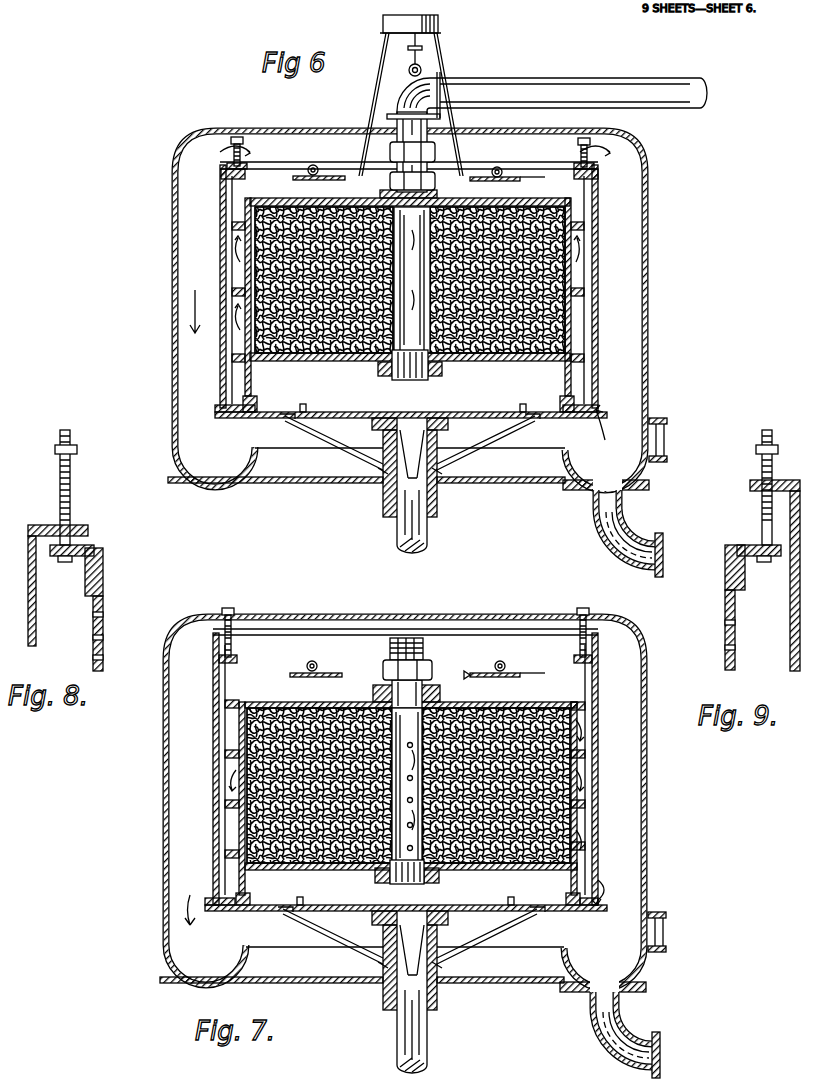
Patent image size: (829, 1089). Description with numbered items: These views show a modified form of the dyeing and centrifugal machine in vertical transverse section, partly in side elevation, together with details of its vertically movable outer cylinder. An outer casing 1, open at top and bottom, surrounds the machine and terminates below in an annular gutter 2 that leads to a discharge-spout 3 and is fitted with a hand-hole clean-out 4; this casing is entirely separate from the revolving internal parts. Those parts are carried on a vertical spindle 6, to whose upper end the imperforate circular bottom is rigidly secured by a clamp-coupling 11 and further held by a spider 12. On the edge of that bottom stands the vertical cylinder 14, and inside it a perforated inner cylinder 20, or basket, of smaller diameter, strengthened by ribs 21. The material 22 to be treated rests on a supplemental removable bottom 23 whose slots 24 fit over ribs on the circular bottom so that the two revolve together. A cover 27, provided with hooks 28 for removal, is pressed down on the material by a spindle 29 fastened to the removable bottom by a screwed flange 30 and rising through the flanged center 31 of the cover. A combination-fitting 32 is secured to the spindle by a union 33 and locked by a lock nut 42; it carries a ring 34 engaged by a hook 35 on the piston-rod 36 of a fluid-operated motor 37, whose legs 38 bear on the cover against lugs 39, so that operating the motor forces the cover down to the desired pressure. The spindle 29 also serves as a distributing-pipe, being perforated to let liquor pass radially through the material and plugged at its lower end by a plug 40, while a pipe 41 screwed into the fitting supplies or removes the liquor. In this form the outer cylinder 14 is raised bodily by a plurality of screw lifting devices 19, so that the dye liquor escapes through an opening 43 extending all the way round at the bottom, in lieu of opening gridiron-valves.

In FIG. 6, the outer casing 1 is at (176, 312).
In FIG. 7, the outer casing 1 is at (166, 800).
In FIG. 6, the annular gutter 2 is at (406, 447).
In FIG. 7, the annular gutter 2 is at (402, 966).
In FIG. 6, the discharge-spout 3 is at (613, 528).
In FIG. 7, the discharge-spout 3 is at (658, 1048).
In FIG. 6, the hand-hole clean-out 4 is at (656, 416).
In FIG. 7, the hand-hole clean-out 4 is at (668, 932).
In FIG. 6, the vertical spindle 6 is at (398, 525).
In FIG. 7, the vertical spindle 6 is at (398, 1035).
In FIG. 6, the clamp-coupling 11 is at (375, 452).
In FIG. 7, the clamp-coupling 11 is at (450, 935).
In FIG. 6, the spider 12 is at (462, 455).
In FIG. 7, the spider 12 is at (348, 950).
In FIG. 6, the vertical cylinder 14 is at (598, 258).
In FIG. 7, the vertical cylinder 14 is at (213, 812).
In FIG. 8, the vertical cylinder 14 is at (65, 598).
In FIG. 9, the vertical cylinder 14 is at (762, 575).
In FIG. 6, the screw lifting device 19 is at (409, 158).
In FIG. 7, the screw lifting device 19 is at (590, 626).
In FIG. 8, the screw lifting device 19 is at (72, 510).
In FIG. 9, the screw lifting device 19 is at (762, 514).
In FIG. 6, the perforated inner cylinder 20 is at (406, 287).
In FIG. 7, the perforated inner cylinder 20 is at (240, 738).
In FIG. 6, the ribs 21 is at (240, 356).
In FIG. 7, the ribs 21 is at (405, 770).
In FIG. 6, the material 22 is at (248, 268).
In FIG. 7, the material 22 is at (408, 798).
In FIG. 6, the supplemental removable bottom 23 is at (505, 362).
In FIG. 7, the supplemental removable bottom 23 is at (522, 872).
In FIG. 6, the slots 24 is at (314, 406).
In FIG. 7, the slots 24 is at (406, 895).
In FIG. 6, the cover 27 is at (524, 176).
In FIG. 7, the cover 27 is at (528, 678).
In FIG. 6, the hooks 28 is at (311, 166).
In FIG. 7, the hooks 28 is at (310, 662).
In FIG. 6, the spindle 29 is at (376, 360).
In FIG. 7, the spindle 29 is at (412, 640).
In FIG. 6, the screwed flange 30 is at (410, 374).
In FIG. 6, the flanged center 31 is at (434, 186).
In FIG. 7, the flanged center 31 is at (436, 684).
In FIG. 6, the combination-fitting 32 is at (398, 100).
In FIG. 6, the union 33 is at (390, 151).
In FIG. 6, the ring 34 is at (421, 70).
In FIG. 6, the hook 35 is at (418, 50).
In FIG. 6, the piston-rod 36 is at (410, 40).
In FIG. 6, the fluid-operated motor 37 is at (390, 18).
In FIG. 6, the legs 38 is at (372, 82).
In FIG. 6, the lugs 39 is at (330, 180).
In FIG. 7, the lugs 39 is at (330, 678).
In FIG. 6, the plug 40 is at (410, 373).
In FIG. 7, the plug 40 is at (407, 872).
In FIG. 6, the pipe 41 is at (562, 72).
In FIG. 6, the lock nut 42 is at (390, 183).
In FIG. 7, the lock nut 42 is at (384, 676).
In FIG. 7, the opening 43 is at (604, 892).